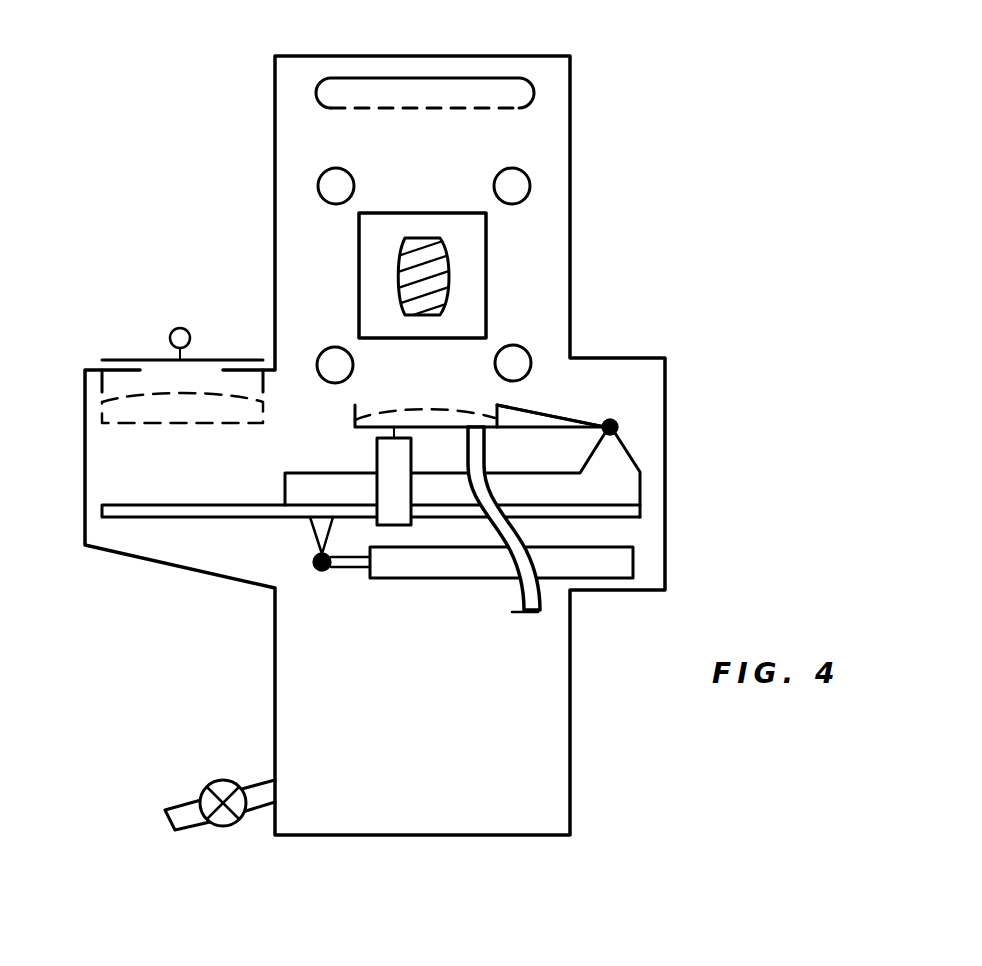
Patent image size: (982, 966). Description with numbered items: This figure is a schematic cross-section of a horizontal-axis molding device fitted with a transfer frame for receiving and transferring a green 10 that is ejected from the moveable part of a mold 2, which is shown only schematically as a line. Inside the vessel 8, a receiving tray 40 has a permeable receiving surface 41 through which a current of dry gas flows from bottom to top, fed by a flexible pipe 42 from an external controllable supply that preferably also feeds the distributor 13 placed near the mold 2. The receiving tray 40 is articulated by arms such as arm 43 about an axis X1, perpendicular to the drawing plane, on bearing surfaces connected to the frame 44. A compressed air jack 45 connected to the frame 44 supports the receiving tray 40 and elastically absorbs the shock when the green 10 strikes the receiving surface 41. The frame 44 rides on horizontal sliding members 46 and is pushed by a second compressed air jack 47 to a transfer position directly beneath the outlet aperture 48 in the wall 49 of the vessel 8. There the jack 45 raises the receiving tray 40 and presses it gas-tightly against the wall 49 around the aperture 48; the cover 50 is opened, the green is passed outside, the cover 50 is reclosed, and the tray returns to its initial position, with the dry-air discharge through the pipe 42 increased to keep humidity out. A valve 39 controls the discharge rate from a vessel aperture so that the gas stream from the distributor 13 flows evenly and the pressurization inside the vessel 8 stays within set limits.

The vessel 8 is at (275, 190).
The distributor 13 is at (487, 88).
The mold 2 is at (448, 228).
The green 10 is at (447, 253).
The wall of the vessel 49 is at (93, 365).
The cover 50 is at (230, 357).
The aperture 48 is at (170, 395).
The receiving surface 41 is at (456, 407).
The receiving tray 40 is at (496, 404).
The arm 43 is at (577, 418).
The axis X1 is at (621, 427).
The frame 44 is at (613, 495).
The compressed air jack 45 is at (378, 457).
The horizontal sliding members 46 is at (266, 512).
The compressed air jack 47 is at (388, 575).
The flexible pipe 42 is at (516, 603).
The valve 39 is at (232, 827).